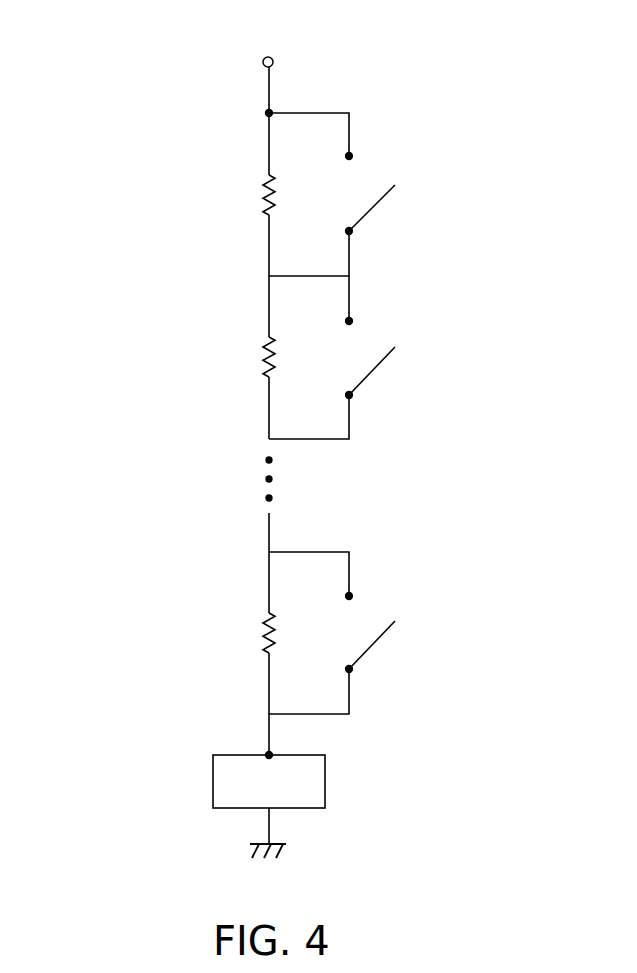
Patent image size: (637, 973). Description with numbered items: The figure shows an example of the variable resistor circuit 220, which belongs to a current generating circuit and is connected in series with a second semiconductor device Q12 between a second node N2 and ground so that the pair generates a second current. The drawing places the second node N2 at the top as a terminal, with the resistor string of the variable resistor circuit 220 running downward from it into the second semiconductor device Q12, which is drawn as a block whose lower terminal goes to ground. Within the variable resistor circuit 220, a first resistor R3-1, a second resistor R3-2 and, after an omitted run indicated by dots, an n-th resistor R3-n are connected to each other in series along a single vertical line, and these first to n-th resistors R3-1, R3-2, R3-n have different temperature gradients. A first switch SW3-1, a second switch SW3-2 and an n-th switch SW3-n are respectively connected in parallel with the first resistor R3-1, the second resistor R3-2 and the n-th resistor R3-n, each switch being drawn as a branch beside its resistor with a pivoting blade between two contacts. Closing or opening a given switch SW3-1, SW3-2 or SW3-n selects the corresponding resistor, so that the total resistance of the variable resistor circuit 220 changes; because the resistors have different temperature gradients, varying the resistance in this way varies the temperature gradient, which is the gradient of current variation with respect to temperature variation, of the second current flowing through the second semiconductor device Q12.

The variable resistor circuit 220 is at (95, 93).
The second node N2 is at (291, 62).
The first resistor R3-1 is at (236, 195).
The second resistor R3-2 is at (236, 357).
The n-th resistor R3-n is at (236, 634).
The first switch SW3-1 is at (375, 194).
The second switch SW3-2 is at (375, 357).
The n-th switch SW3-n is at (375, 633).
The second semiconductor device Q12 is at (269, 781).